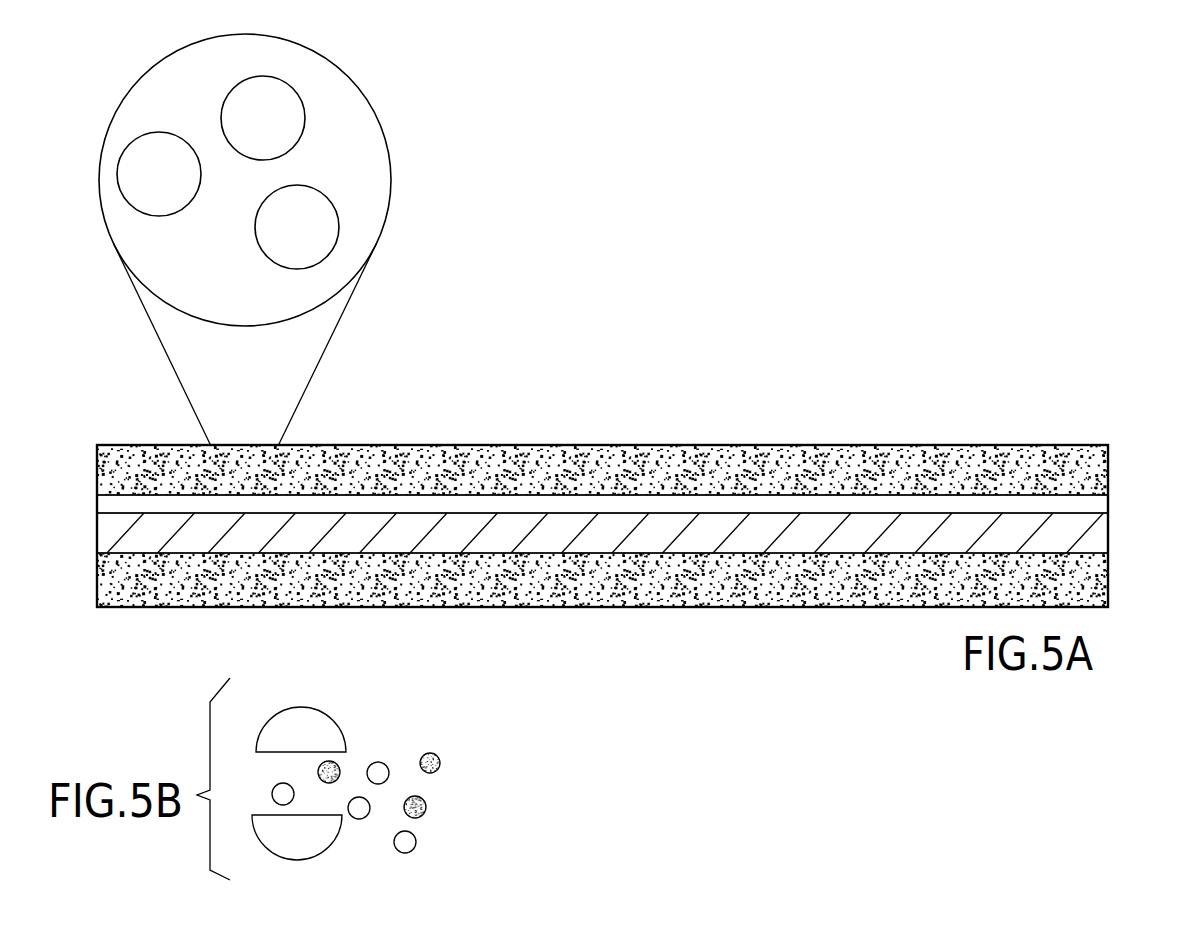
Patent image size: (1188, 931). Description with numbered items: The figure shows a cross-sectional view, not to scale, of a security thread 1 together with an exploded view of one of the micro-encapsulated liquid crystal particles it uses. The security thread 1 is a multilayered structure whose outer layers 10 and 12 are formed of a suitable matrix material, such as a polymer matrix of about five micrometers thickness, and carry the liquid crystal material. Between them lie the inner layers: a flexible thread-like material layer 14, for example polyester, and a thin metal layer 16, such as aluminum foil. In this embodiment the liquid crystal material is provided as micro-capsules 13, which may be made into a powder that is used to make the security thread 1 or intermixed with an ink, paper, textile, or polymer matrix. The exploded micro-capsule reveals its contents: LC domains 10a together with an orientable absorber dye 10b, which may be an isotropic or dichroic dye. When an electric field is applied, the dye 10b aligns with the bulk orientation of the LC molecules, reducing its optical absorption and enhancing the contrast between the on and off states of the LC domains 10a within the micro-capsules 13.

In FIG. 5A, the security thread 1 is at (846, 398).
In FIG. 5A, the outer layer 10 is at (1108, 466).
In FIG. 5B, the LC domains 10a is at (416, 841).
In FIG. 5B, the orientable absorber dye 10b is at (440, 759).
In FIG. 5A, the outer layer 12 is at (1108, 586).
In FIG. 5A, the micro-capsules 13 is at (306, 112).
In FIG. 5B, the micro-capsules 13 is at (295, 705).
In FIG. 5A, the flexible thread-like material layer 14 is at (1108, 501).
In FIG. 5A, the thin metal layer 16 is at (1108, 541).